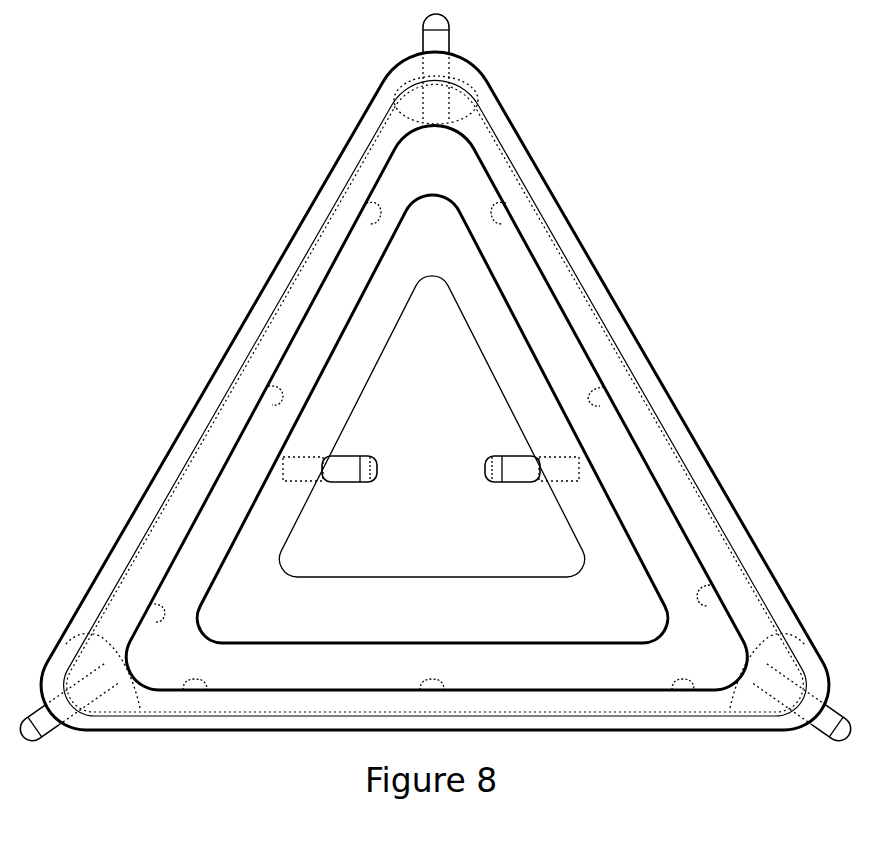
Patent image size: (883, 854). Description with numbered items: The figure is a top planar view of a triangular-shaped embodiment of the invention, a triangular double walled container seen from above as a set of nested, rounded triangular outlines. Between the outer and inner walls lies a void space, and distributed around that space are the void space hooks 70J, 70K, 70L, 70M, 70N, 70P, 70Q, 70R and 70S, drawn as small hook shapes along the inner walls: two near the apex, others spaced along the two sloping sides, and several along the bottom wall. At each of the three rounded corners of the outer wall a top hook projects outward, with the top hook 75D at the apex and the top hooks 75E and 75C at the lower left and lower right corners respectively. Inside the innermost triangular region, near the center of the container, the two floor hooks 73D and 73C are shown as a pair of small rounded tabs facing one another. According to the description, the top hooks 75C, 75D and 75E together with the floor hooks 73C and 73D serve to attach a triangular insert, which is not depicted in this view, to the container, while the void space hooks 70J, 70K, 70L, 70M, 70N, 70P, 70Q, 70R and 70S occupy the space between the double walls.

The top hook 75C is at (836, 688).
The top hook 75D is at (416, 39).
The top hook 75E is at (35, 700).
The floor hook 73C is at (486, 483).
The floor hook 73D is at (378, 483).
The tactile feature 70J is at (375, 226).
The void space hook 70K is at (497, 226).
The void space hook 70L is at (588, 396).
The void space hook 70M is at (697, 598).
The void space hook 70N is at (683, 679).
The void space hook 70P is at (432, 679).
The void space hook 70Q is at (195, 679).
The void space hook 70R is at (158, 622).
The void space hook 70S is at (276, 404).